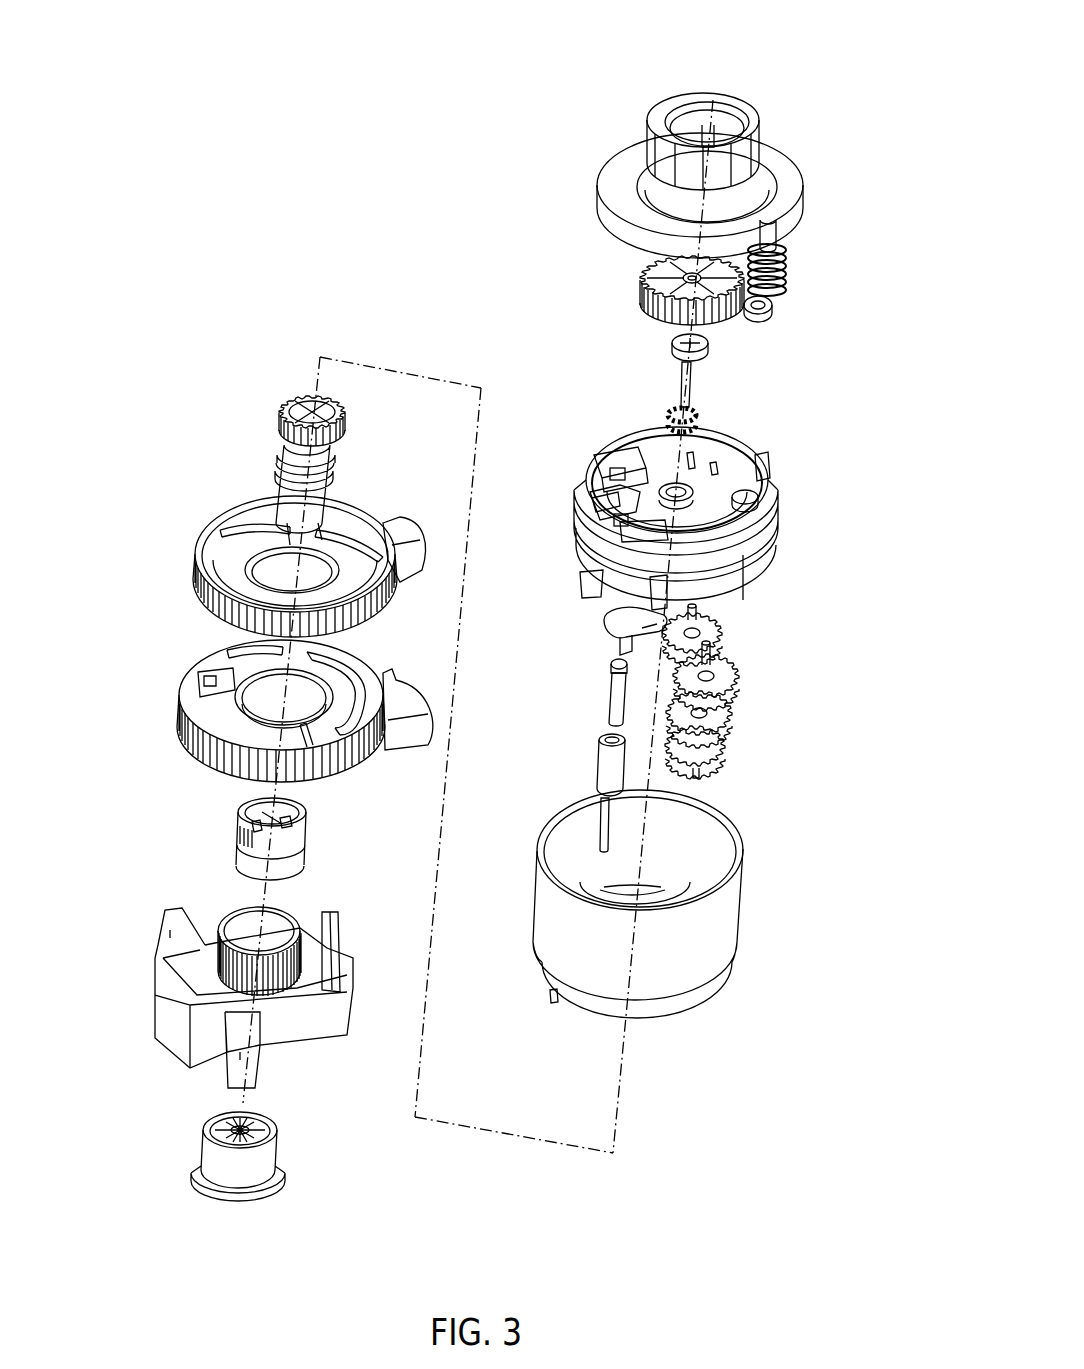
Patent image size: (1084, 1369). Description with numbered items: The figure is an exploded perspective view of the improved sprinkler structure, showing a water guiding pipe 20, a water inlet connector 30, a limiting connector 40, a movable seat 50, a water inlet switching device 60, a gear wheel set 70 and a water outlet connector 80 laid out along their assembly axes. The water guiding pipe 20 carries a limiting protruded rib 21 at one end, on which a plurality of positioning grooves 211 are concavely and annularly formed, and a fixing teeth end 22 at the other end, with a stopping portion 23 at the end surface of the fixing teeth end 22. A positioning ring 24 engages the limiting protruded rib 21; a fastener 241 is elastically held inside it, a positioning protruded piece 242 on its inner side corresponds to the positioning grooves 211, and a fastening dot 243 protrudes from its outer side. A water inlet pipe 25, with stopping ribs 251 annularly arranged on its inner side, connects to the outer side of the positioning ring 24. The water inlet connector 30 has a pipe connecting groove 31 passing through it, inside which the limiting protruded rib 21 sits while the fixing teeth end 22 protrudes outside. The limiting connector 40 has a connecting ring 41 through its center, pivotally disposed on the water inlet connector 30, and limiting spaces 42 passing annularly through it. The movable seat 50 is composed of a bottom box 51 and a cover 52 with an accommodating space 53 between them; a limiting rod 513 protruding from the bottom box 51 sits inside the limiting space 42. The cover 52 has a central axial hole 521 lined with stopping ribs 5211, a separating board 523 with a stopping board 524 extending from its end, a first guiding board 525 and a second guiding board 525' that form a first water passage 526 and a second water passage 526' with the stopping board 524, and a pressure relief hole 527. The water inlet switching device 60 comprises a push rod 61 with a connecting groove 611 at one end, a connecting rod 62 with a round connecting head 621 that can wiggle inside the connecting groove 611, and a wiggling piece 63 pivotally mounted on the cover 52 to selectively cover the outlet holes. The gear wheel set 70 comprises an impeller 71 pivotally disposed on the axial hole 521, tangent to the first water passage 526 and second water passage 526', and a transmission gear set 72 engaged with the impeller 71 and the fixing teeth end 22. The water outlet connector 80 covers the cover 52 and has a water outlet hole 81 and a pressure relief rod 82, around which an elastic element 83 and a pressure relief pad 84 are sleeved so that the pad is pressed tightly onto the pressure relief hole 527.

The water guiding pipe 20 is at (324, 484).
The limiting protruded rib 21 is at (324, 544).
The positioning grooves 211 is at (383, 523).
The fixing teeth end 22 is at (337, 437).
The stopping portion 23 is at (317, 402).
The positioning ring 24 is at (255, 830).
The fastener 241 is at (297, 815).
The positioning protruded piece 242 is at (240, 815).
The fastening dot 243 is at (237, 827).
The water inlet pipe 25 is at (284, 1126).
The stopping ribs 251 is at (257, 1118).
The water inlet connector 30 is at (253, 991).
The pipe connecting groove 31 is at (233, 927).
The limiting connector 40 is at (271, 685).
The connecting ring 41 is at (247, 662).
The limiting spaces 42 is at (207, 703).
The movable seat 50 is at (629, 923).
The bottom box 51 is at (737, 943).
The limiting rod 513 is at (552, 998).
The accommodating space 53 is at (707, 838).
The cover 52 is at (725, 486).
The axial hole 521 is at (700, 468).
The stopping ribs 5211 is at (713, 345).
The separating board 523 is at (593, 493).
The stopping board 524 is at (597, 480).
The first guiding board 525 is at (575, 427).
The second guiding board 525' is at (599, 551).
The first water passage 526 is at (576, 444).
The second water passage 526' is at (573, 531).
The pressure relief hole 527 is at (755, 495).
The water inlet switching device 60 is at (597, 842).
The push rod 61 is at (553, 759).
The connecting groove 611 is at (597, 737).
The connecting rod 62 is at (558, 674).
The round connecting head 621 is at (613, 668).
The wiggling piece 63 is at (604, 637).
The gear wheel set 70 is at (752, 681).
The impeller 71 is at (642, 305).
The transmission gear set 72 is at (730, 708).
The water outlet connector 80 is at (723, 161).
The water outlet hole 81 is at (697, 133).
The pressure relief rod 82 is at (772, 195).
The elastic element 83 is at (773, 303).
The pressure relief pad 84 is at (790, 263).